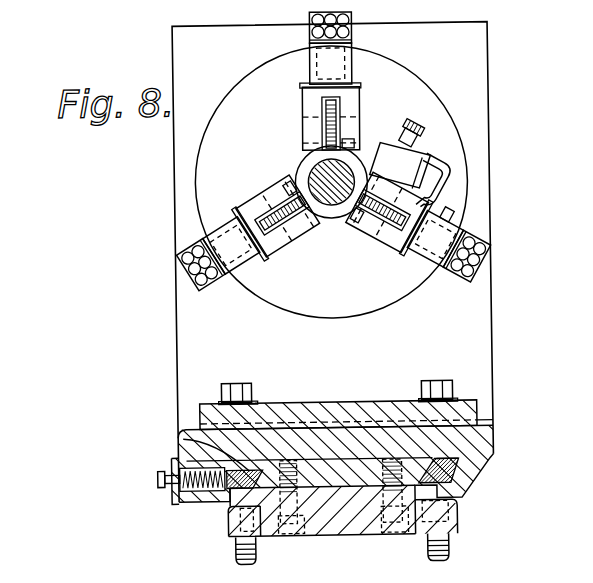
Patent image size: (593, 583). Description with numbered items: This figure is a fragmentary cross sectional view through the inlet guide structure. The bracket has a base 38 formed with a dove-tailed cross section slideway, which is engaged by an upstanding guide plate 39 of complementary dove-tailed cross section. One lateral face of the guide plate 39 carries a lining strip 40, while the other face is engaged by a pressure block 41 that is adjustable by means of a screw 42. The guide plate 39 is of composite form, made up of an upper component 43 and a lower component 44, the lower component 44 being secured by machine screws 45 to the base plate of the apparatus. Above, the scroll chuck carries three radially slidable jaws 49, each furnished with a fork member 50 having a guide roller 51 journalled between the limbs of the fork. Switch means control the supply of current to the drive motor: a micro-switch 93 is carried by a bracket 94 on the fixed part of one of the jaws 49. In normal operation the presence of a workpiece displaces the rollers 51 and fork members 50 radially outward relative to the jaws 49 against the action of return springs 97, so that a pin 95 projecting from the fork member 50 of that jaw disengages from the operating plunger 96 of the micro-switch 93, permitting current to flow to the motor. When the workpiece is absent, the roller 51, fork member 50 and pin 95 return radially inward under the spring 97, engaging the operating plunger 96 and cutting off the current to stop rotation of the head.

The base 38 is at (479, 465).
The guide plate 39 is at (454, 515).
The lining strip 40 is at (456, 459).
The pressure block 41 is at (232, 486).
The screw 42 is at (157, 473).
The upper component 43 is at (358, 460).
The lower component 44 is at (324, 522).
The machine screws 45 is at (250, 552).
The jaws 49 is at (356, 25).
The fork member 50 is at (368, 227).
The guide roller 51 is at (358, 176).
The micro-switch 93 is at (436, 157).
The bracket 94 is at (458, 182).
The pin 95 is at (452, 216).
The operating plunger 96 is at (452, 170).
The return springs 97 is at (406, 258).